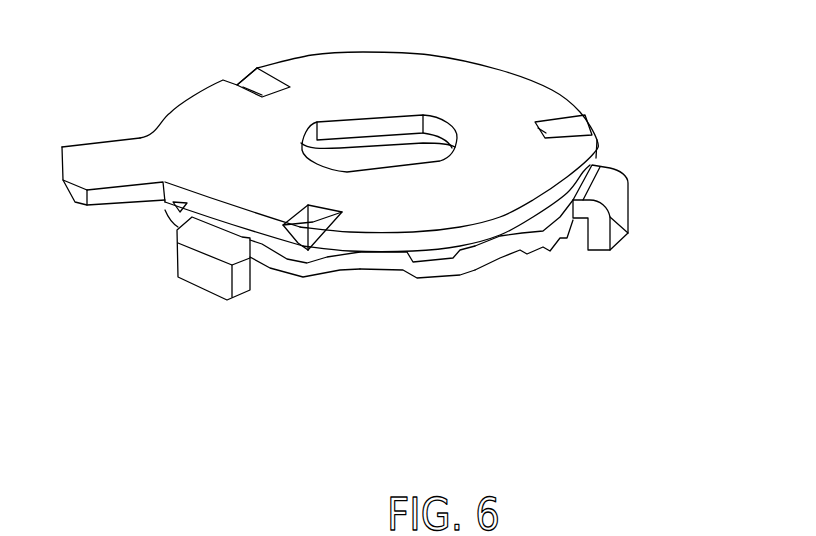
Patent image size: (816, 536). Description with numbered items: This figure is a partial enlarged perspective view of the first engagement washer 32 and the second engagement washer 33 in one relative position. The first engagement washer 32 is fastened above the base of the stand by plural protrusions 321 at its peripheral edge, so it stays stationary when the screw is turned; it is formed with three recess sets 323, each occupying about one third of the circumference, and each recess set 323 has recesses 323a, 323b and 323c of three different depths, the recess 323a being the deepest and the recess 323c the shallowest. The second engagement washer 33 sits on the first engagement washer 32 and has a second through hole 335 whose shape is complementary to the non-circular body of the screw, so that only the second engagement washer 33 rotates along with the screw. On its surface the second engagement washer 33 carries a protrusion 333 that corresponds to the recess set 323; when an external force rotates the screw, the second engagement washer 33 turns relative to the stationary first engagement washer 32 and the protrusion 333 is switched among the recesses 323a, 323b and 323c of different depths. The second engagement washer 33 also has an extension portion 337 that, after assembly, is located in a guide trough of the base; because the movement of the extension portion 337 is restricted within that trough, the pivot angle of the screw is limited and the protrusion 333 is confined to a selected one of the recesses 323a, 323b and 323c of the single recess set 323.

The second engagement washer 33 is at (330, 131).
The extension portion 337 is at (122, 162).
The second through hole 335 is at (392, 122).
The protrusion 333 is at (308, 250).
The first engagement washer 32 is at (434, 235).
The protrusion 321 is at (610, 187).
The recess set 323 is at (413, 296).
The recess 323a is at (315, 267).
The recess 323b is at (438, 263).
The recess 323c is at (526, 268).